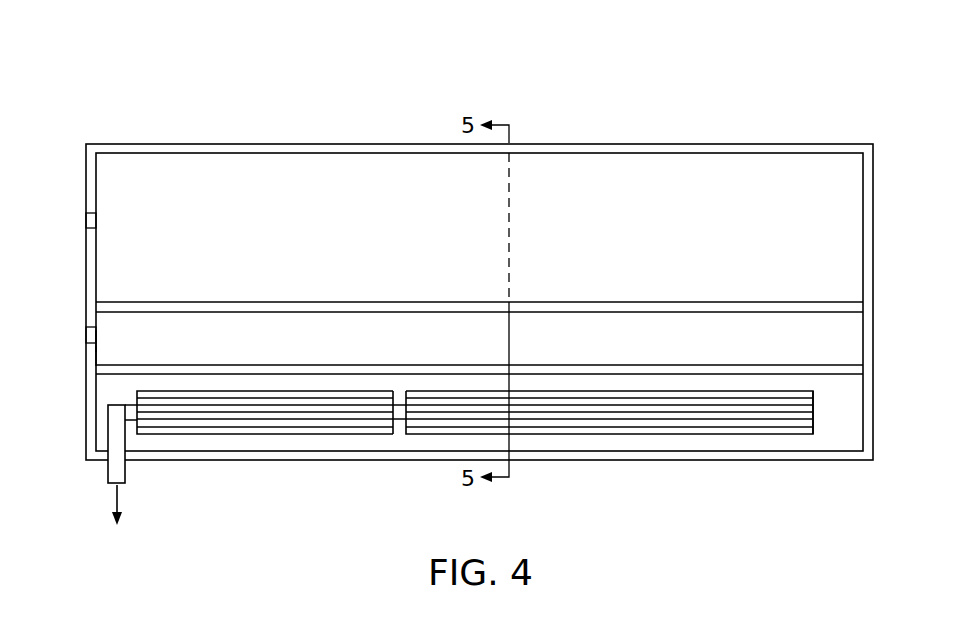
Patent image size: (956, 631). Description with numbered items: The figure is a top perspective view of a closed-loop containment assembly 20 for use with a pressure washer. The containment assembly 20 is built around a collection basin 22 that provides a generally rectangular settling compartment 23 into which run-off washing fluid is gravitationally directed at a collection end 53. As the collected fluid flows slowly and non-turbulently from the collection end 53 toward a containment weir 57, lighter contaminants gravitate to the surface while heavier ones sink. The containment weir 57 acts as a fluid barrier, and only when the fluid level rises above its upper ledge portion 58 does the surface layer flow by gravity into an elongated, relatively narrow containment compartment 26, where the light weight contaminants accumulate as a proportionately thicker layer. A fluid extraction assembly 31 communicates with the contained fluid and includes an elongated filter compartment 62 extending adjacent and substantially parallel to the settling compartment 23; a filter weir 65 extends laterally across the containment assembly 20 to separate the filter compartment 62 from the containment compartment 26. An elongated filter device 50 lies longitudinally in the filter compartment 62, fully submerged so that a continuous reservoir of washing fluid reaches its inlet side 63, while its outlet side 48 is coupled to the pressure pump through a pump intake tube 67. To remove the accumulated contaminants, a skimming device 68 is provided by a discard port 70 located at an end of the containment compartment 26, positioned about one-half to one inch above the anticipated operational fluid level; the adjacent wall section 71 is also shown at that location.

The containment assembly 20 is at (610, 68).
The collection basin 22 is at (718, 143).
The settling compartment 23 is at (591, 238).
The containment compartment 26 is at (626, 346).
The fluid extraction assembly 31 is at (632, 445).
The outlet side 48 is at (110, 488).
The filter device 50 is at (760, 438).
The collection end 53 is at (165, 170).
The containment weir 57 is at (137, 302).
The upper ledge portion 58 is at (229, 302).
The filter compartment 62 is at (198, 452).
The inlet side 63 is at (805, 383).
The filter weir 65 is at (833, 364).
The pump intake tube 67 is at (108, 468).
The skimming device 68 is at (79, 346).
The discard port 70 is at (100, 340).
The inner wall section 71 is at (100, 352).